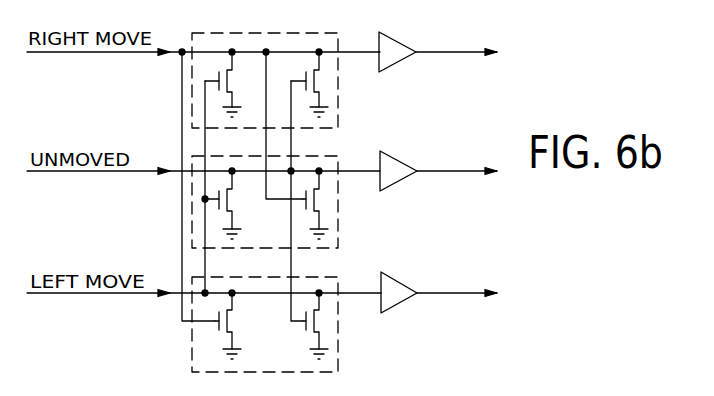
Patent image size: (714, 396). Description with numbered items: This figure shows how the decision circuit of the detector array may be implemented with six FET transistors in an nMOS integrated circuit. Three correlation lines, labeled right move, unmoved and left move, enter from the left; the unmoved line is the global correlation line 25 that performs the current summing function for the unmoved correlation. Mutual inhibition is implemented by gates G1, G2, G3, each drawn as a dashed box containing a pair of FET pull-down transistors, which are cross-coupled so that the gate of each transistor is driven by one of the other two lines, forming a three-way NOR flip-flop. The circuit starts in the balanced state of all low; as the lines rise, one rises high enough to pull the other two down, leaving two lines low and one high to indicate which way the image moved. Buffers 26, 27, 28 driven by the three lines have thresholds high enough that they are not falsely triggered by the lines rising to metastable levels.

The global correlation line 25 is at (107, 173).
The buffer 26 is at (407, 43).
The buffer 27 is at (411, 161).
The buffer 28 is at (413, 279).
The gate G1 is at (338, 80).
The gate G2 is at (337, 220).
The gate G3 is at (338, 321).